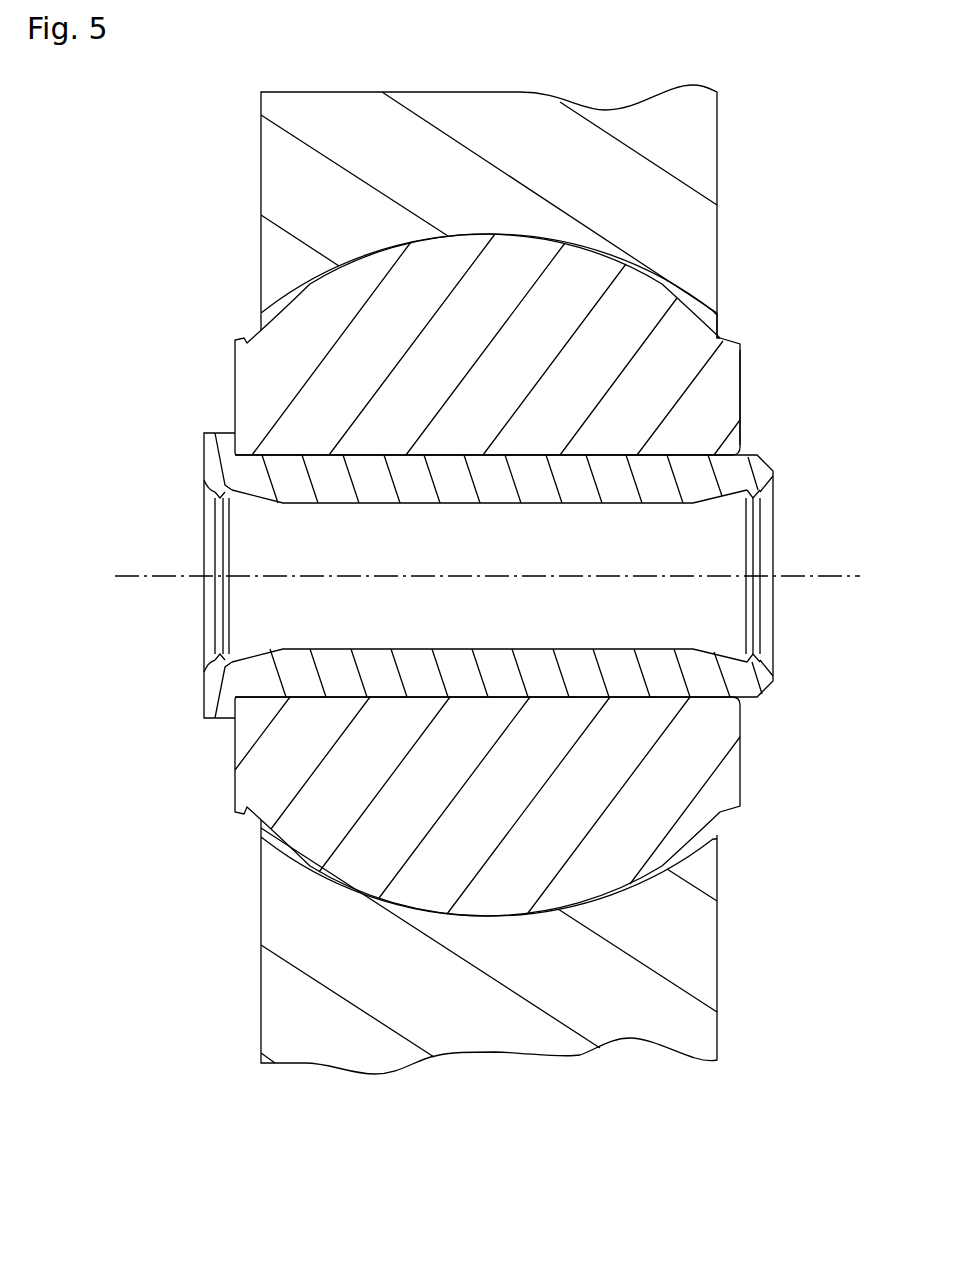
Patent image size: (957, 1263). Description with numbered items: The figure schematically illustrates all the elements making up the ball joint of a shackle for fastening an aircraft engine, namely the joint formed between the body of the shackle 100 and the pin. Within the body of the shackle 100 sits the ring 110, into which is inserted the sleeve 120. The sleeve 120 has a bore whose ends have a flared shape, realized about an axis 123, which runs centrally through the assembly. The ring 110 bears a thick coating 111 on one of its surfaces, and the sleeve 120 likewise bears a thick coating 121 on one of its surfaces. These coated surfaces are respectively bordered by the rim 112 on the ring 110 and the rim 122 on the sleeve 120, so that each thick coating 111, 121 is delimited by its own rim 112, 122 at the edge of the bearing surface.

The body of the shackle 100 is at (693, 166).
The ring 110 is at (723, 413).
The thick coating 111 is at (725, 337).
The rim 112 is at (737, 346).
The sleeve 120 is at (758, 471).
The thick coating 121 is at (613, 504).
The rim 122 is at (775, 492).
The axis 123 is at (797, 573).